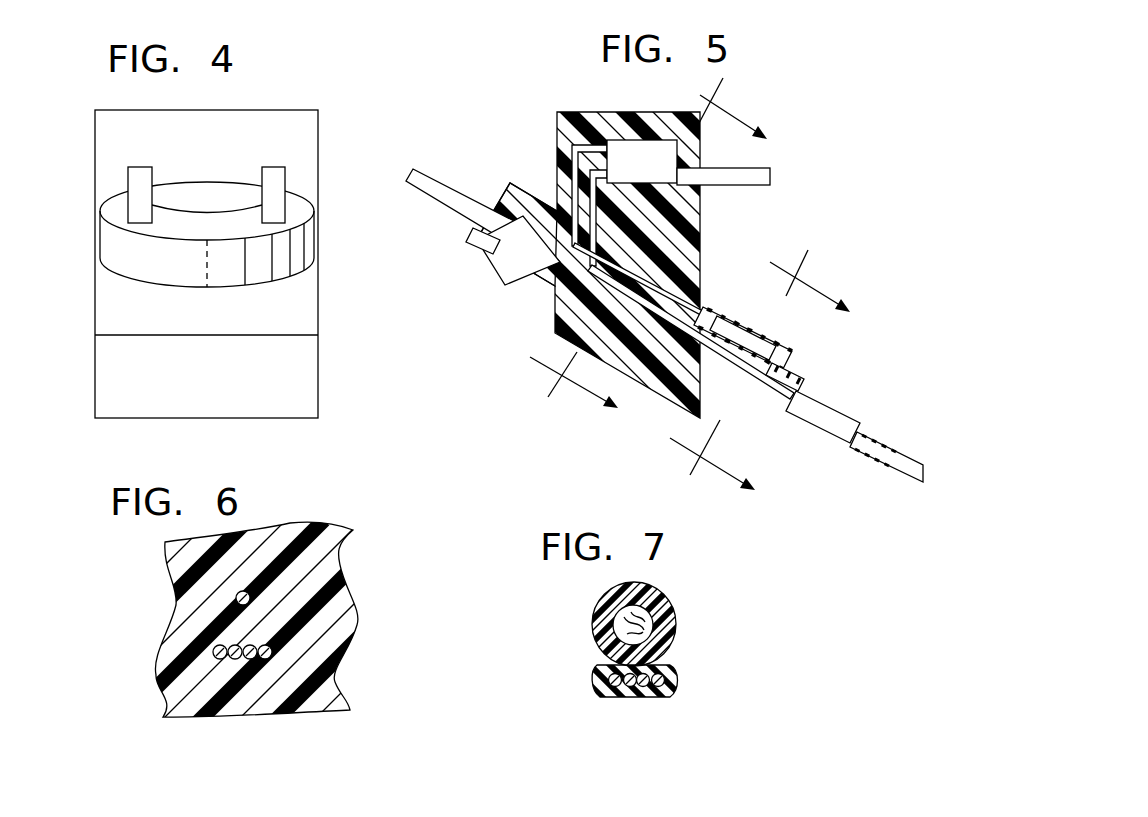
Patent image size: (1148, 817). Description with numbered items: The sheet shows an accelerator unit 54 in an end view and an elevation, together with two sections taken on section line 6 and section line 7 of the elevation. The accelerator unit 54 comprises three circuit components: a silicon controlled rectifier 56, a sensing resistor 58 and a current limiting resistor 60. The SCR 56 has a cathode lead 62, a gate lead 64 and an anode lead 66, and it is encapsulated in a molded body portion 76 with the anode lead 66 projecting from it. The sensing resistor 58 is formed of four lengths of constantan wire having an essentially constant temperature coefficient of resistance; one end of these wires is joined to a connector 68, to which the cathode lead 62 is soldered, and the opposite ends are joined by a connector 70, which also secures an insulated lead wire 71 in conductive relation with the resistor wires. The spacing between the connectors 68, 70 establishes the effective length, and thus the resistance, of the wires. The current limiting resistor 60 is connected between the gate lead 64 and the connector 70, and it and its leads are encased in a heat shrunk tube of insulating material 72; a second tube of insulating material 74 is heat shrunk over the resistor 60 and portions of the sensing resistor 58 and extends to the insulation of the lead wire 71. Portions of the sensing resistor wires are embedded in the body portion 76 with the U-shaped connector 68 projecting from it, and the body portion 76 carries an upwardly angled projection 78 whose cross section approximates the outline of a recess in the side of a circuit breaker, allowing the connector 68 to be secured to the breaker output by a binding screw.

In FIG. 4, the accelerator unit 54 is at (273, 88).
In FIG. 5, the accelerator unit 54 is at (576, 102).
In FIG. 5, the silicon controlled rectifier (SCR) 56 is at (660, 140).
In FIG. 5, the sensing resistor 58 is at (597, 297).
In FIG. 6, the sensing resistor 58 is at (218, 656).
In FIG. 7, the sensing resistor 58 is at (607, 670).
In FIG. 5, the current limiting resistor 60 is at (757, 327).
In FIG. 7, the current limiting resistor 60 is at (655, 618).
In FIG. 5, the cathode lead 62 is at (571, 152).
In FIG. 5, the gate lead 64 is at (640, 222).
In FIG. 6, the gate lead 64 is at (240, 600).
In FIG. 5, the anode lead 66 is at (770, 172).
In FIG. 4, the connector 68 is at (287, 167).
In FIG. 5, the connector 68 is at (443, 182).
In FIG. 5, the connector 70 is at (800, 412).
In FIG. 5, the insulated lead wire 71 is at (910, 485).
In FIG. 5, the tube of insulating material 72 is at (795, 380).
In FIG. 7, the tube of insulating material 72 is at (648, 590).
In FIG. 5, the second tube of insulating material 74 is at (885, 450).
In FIG. 7, the second tube of insulating material 74 is at (655, 692).
In FIG. 5, the body portion 76 is at (560, 330).
In FIG. 4, the projection 78 is at (280, 246).
In FIG. 5, the section line 6— 6 is at (641, 243).
In FIG. 5, the section line 7— 7 is at (759, 368).